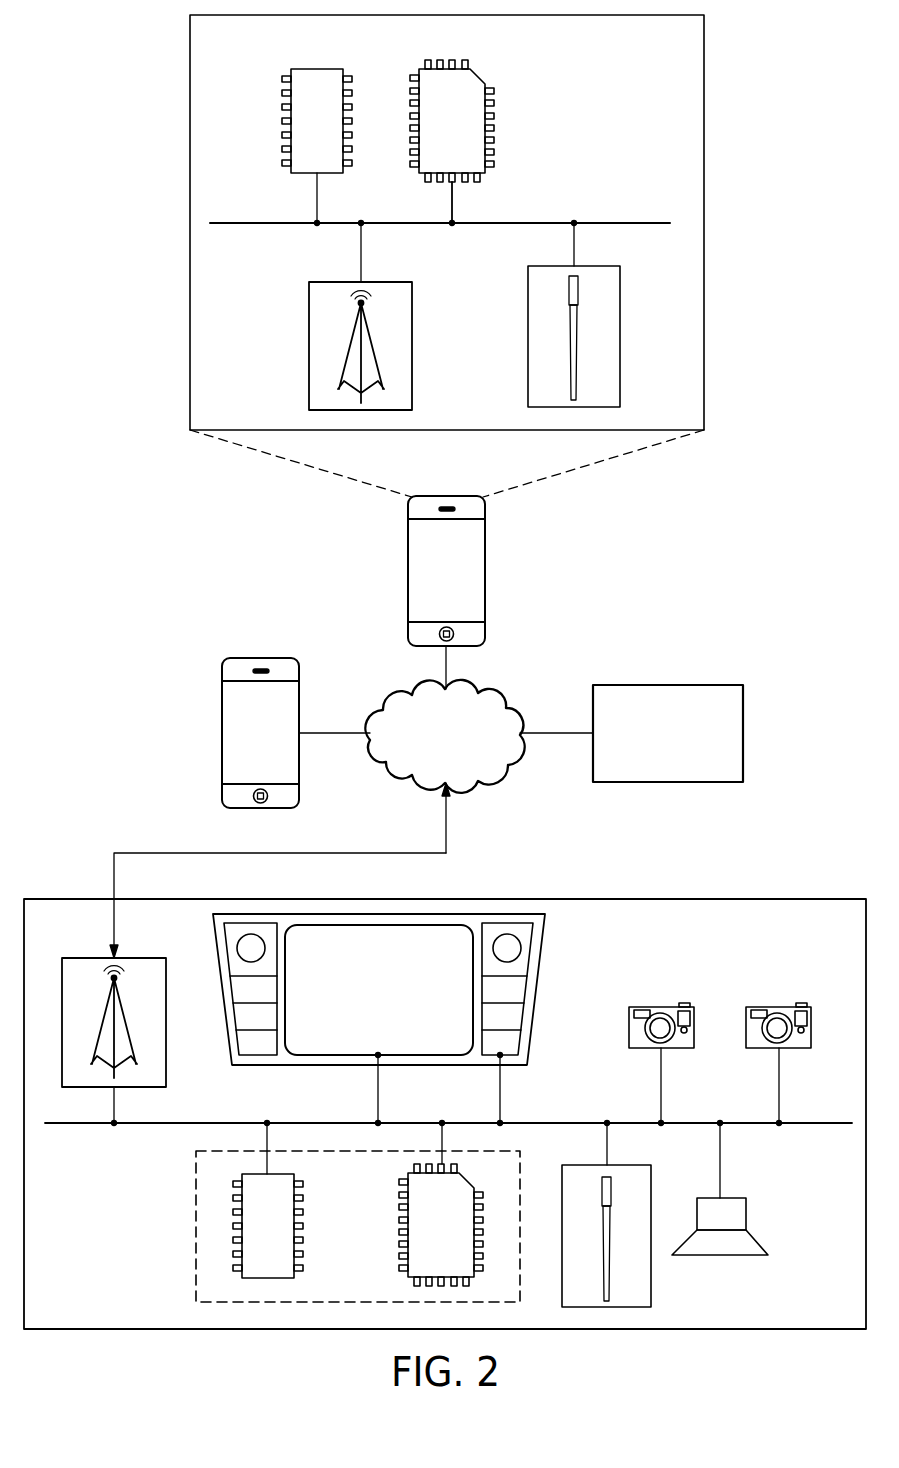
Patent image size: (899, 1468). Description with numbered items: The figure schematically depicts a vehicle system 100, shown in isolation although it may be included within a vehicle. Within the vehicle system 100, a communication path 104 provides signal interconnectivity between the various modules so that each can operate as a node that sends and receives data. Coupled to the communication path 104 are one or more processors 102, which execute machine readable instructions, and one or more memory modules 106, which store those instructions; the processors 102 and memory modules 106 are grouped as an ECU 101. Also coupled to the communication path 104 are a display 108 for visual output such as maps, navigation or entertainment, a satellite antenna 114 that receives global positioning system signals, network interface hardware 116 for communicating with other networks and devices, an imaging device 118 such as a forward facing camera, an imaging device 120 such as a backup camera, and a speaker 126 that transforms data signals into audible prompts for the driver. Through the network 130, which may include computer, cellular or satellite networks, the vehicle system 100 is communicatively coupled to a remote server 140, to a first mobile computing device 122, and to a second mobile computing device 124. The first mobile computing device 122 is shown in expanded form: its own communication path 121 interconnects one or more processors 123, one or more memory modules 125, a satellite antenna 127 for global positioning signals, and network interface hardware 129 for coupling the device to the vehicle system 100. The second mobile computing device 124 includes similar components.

The vehicle system 100 is at (805, 899).
The ECU 101 is at (196, 1191).
The processors 102 is at (399, 1258).
The communication path 104 is at (825, 1122).
The memory modules 106 is at (302, 1197).
The display 108 is at (422, 935).
The satellite antenna 114 is at (651, 1286).
The network interface hardware 116 is at (82, 958).
The imaging device 118 is at (661, 1007).
The imaging device 120 is at (779, 1007).
The communication path 121 is at (628, 222).
The first mobile computing device 122 is at (485, 548).
The processors 123 is at (282, 107).
The second mobile computing device 124 is at (258, 658).
The memory modules 125 is at (494, 101).
The speaker 126 is at (746, 1215).
The satellite antenna 127 is at (528, 296).
The network interface hardware 129 is at (309, 312).
The network 130 is at (392, 696).
The remote server 140 is at (668, 685).